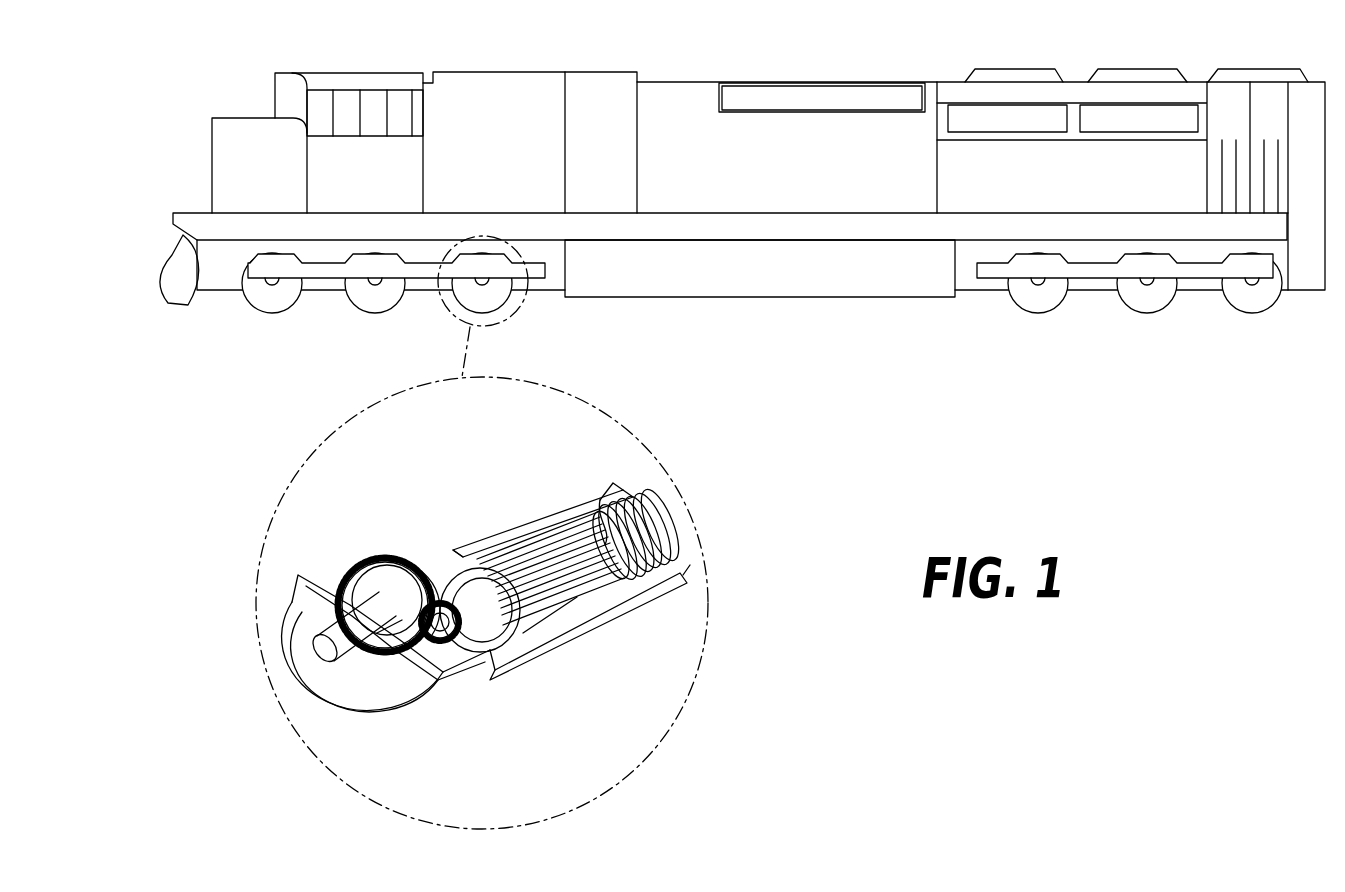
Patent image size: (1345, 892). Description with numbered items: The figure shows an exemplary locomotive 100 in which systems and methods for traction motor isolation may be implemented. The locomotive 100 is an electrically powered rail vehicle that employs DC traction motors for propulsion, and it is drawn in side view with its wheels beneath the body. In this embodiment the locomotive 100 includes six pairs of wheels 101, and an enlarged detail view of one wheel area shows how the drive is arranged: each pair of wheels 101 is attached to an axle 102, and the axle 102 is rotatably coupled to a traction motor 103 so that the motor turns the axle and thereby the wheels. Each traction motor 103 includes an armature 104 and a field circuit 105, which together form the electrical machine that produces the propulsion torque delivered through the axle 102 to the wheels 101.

The locomotive 100 is at (146, 196).
The wheels 101 is at (375, 707).
The axle 102 is at (322, 650).
The traction motor 103 is at (612, 487).
The armature 104 is at (558, 597).
The field circuit 105 is at (455, 550).